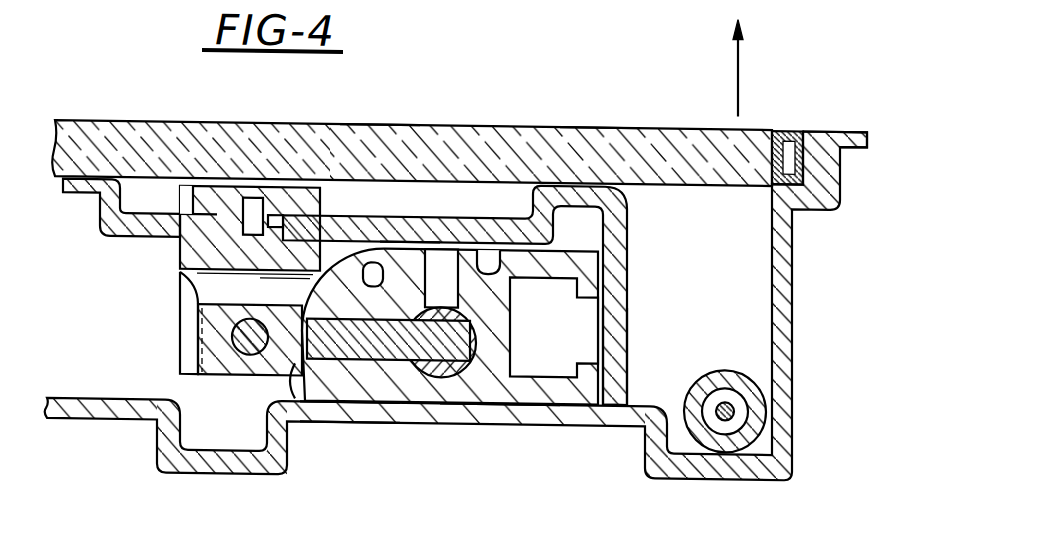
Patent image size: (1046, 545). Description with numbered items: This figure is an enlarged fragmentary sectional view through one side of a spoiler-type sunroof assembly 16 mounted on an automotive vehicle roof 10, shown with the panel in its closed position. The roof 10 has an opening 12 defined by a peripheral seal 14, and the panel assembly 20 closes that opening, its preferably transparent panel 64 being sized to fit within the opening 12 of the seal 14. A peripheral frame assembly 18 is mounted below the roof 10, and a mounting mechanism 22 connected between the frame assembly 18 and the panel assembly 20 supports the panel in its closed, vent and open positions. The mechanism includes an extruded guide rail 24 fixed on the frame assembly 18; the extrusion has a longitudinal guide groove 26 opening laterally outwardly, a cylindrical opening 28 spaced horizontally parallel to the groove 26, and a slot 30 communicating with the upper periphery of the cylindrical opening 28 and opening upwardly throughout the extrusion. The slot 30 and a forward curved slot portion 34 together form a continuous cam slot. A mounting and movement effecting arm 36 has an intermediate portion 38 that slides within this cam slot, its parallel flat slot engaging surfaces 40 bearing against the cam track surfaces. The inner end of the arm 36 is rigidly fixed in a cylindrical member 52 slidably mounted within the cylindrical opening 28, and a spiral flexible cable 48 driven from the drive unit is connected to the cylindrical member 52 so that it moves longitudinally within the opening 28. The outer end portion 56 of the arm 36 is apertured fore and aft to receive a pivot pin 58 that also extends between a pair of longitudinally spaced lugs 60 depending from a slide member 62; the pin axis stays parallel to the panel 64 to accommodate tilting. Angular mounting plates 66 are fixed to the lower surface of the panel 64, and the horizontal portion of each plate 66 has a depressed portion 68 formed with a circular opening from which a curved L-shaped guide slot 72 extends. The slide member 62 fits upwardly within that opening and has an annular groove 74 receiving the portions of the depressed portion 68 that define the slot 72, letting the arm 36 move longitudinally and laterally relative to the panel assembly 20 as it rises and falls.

The vehicle roof 10 is at (838, 120).
The opening 12 is at (783, 161).
The peripheral seal 14 is at (820, 163).
The sunroof assembly 16 is at (600, 118).
The peripheral frame assembly 18 is at (348, 416).
The panel assembly 20 is at (479, 116).
The mounting mechanism 22 is at (598, 265).
The guide rail 24 is at (490, 399).
The longitudinal guide groove 26 is at (625, 354).
The cylindrical opening 28 is at (497, 309).
The slot 30 is at (428, 253).
The curved slot portion 34 is at (367, 276).
The mounting and movement effecting arm 36 is at (186, 350).
The intermediate portion 38 is at (335, 357).
The flat slot engaging surface 40 is at (396, 308).
The spiral flexible cable 48 is at (732, 409).
The cylindrical member 52 is at (717, 364).
The outer end portion 56 is at (238, 366).
The pivot pin 58 is at (189, 331).
The lug 60 is at (187, 364).
The slide member 62 is at (181, 258).
The panel 64 is at (376, 120).
The angular mounting plate 66 is at (629, 201).
The depressed portion 68 is at (153, 231).
The guide slot 72 is at (280, 218).
The annular groove 74 is at (213, 213).